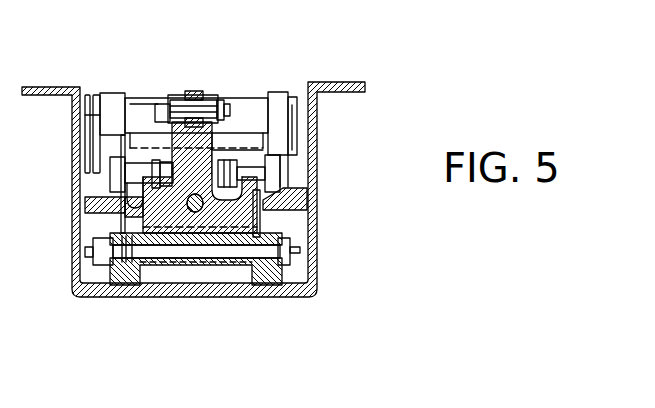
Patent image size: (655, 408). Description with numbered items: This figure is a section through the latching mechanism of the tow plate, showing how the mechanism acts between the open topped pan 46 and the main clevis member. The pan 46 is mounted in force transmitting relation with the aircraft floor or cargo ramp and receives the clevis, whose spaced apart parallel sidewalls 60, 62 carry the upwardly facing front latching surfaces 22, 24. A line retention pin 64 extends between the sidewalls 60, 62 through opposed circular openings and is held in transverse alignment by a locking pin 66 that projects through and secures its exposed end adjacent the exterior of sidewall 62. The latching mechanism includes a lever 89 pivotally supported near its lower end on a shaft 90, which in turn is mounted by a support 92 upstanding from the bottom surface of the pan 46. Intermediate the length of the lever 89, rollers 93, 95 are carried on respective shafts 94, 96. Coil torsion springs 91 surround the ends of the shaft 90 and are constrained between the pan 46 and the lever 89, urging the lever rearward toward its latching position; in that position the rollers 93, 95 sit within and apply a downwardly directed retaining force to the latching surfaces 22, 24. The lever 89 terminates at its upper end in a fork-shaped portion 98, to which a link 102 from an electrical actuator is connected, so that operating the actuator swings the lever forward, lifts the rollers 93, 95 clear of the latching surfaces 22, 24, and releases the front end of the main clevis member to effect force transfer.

The front latching surface 22 is at (290, 183).
The front latching surface 24 is at (107, 192).
The pan 46 is at (315, 238).
The sidewall 60 is at (282, 95).
The sidewall 62 is at (115, 95).
The line retention pin 64 is at (143, 100).
The locking pin 66 is at (92, 97).
The lever 89 is at (214, 152).
The shaft 90 is at (227, 250).
The coil torsion springs 91 is at (257, 223).
The support 92 is at (280, 270).
The roller 93 is at (273, 170).
The shaft 94 is at (250, 168).
The roller 95 is at (110, 180).
The shaft 96 is at (137, 173).
The fork-shaped portion 98 is at (220, 130).
The link 102 is at (192, 93).